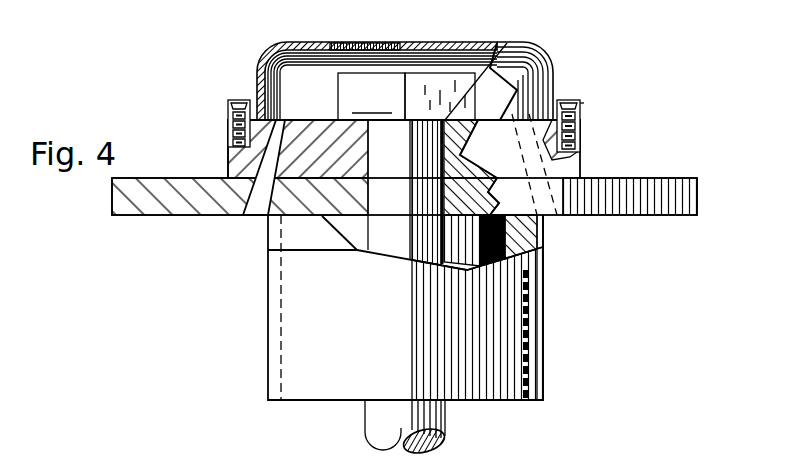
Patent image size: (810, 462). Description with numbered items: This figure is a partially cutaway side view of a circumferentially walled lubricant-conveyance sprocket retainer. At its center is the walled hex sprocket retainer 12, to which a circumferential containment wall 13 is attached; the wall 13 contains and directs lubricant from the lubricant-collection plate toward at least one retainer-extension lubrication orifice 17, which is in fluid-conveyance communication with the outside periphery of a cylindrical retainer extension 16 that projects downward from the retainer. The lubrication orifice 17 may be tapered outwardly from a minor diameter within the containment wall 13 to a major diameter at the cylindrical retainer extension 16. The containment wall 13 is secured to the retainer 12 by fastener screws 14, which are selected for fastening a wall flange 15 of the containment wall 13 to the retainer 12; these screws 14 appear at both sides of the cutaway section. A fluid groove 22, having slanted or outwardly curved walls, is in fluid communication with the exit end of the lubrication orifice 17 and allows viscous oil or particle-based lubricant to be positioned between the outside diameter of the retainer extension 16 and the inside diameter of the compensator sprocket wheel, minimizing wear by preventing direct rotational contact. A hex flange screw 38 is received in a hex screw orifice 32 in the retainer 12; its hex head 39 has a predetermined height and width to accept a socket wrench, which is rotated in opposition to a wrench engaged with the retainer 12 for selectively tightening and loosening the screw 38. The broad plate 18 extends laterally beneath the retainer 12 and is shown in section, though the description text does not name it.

The walled hex sprocket retainer 12 is at (622, 356).
The circumferential containment wall 13 is at (257, 80).
The fastener screws 14 is at (228, 124).
The wall flange 15 is at (583, 105).
The cylindrical retainer extension 16 is at (322, 368).
The retainer-extension lubrication orifice 17 is at (258, 190).
The mounting plate 18 is at (675, 197).
The fluid groove 22 is at (278, 314).
The hex screw orifice 32 is at (507, 43).
The hex flange screw 38 is at (390, 188).
The hex head 39 is at (406, 96).